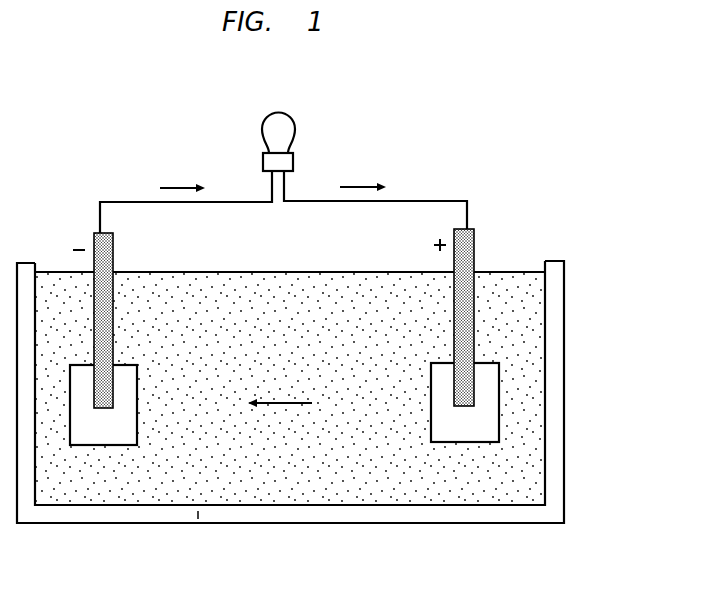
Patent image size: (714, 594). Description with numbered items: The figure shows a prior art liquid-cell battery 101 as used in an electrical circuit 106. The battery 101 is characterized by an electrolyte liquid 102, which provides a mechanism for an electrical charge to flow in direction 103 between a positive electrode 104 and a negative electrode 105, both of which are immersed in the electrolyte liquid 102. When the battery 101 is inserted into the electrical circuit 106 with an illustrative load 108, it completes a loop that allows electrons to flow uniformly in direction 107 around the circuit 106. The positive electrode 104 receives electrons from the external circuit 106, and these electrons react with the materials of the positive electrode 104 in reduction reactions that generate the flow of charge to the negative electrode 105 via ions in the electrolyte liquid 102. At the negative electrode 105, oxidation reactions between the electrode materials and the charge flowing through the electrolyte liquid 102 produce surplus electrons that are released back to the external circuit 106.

The liquid-cell battery 101 is at (653, 157).
The electrolyte liquid 102 is at (347, 270).
The direction of charge flow 103 is at (280, 403).
The positive electrode 104 is at (475, 250).
The negative electrode 105 is at (113, 255).
The electrical circuit 106 is at (242, 203).
The direction of electron flow 107 is at (180, 189).
The load 108 is at (297, 125).